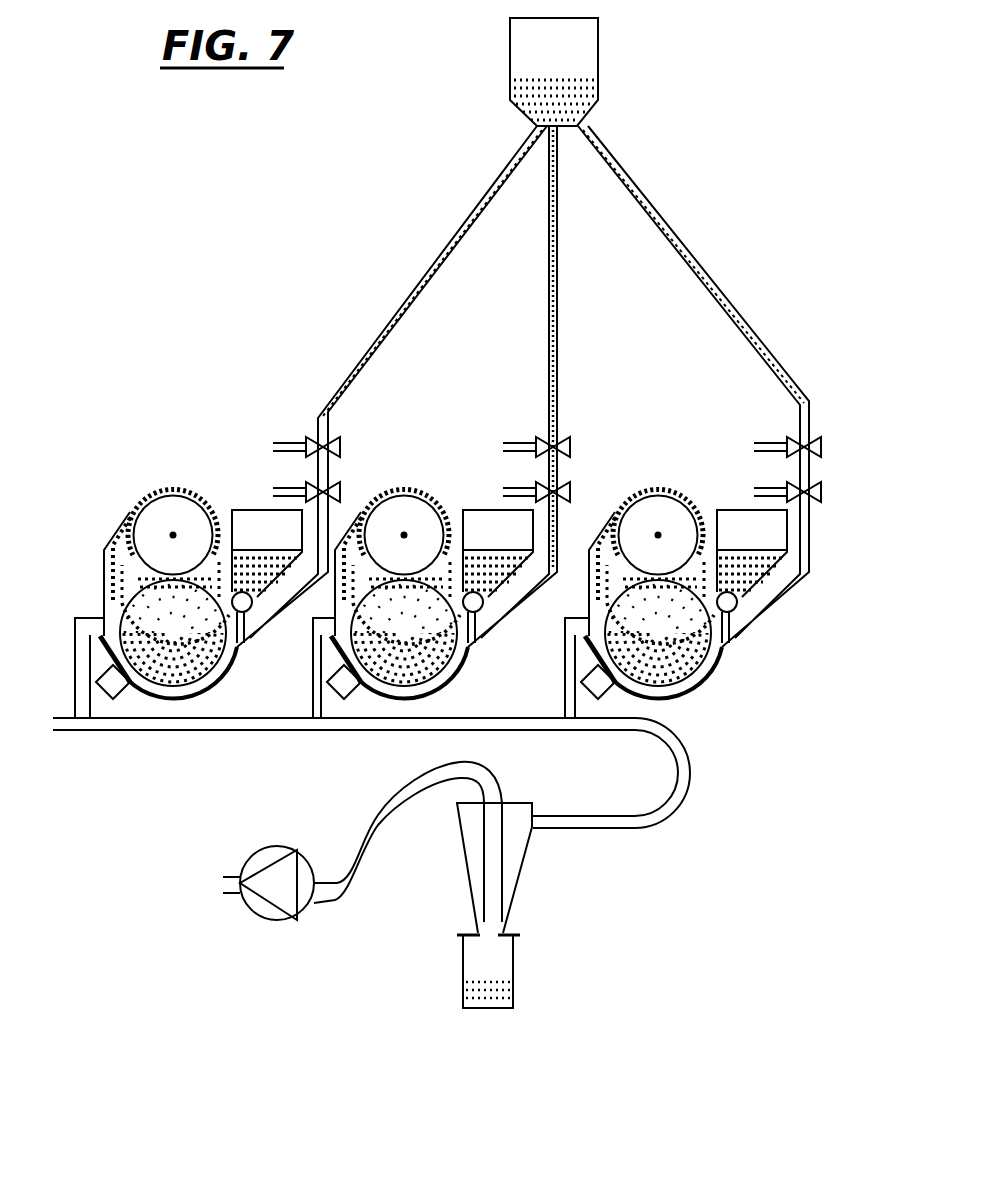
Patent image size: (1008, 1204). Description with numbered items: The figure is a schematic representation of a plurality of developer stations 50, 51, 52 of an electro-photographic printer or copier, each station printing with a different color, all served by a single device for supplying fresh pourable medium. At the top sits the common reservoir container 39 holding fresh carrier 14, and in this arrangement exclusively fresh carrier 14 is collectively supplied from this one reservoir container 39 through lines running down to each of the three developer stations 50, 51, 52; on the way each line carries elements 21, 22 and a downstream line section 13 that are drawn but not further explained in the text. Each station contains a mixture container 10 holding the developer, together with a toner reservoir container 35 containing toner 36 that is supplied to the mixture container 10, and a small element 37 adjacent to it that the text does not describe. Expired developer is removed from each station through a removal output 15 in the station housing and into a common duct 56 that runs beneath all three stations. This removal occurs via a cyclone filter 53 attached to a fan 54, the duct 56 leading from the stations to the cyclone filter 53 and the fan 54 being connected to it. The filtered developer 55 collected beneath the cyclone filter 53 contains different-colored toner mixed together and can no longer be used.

The mixture container 10 is at (200, 693).
The toner supply pipe 13 is at (294, 605).
The fresh carrier 14 is at (512, 96).
The removal output 15 is at (75, 672).
The valve 21 is at (341, 448).
The valve 22 is at (341, 492).
The toner reservoir container 35 is at (245, 510).
The toner 36 is at (250, 550).
The toner sensor 37 is at (249, 638).
The common reservoir container 39 is at (598, 50).
The developer station 50 is at (193, 460).
The developer station 51 is at (409, 449).
The developer station 52 is at (671, 462).
The cyclone filter 53 is at (517, 853).
The fan 54 is at (263, 921).
The filtered developer 55 is at (507, 983).
The common duct 56 is at (204, 731).